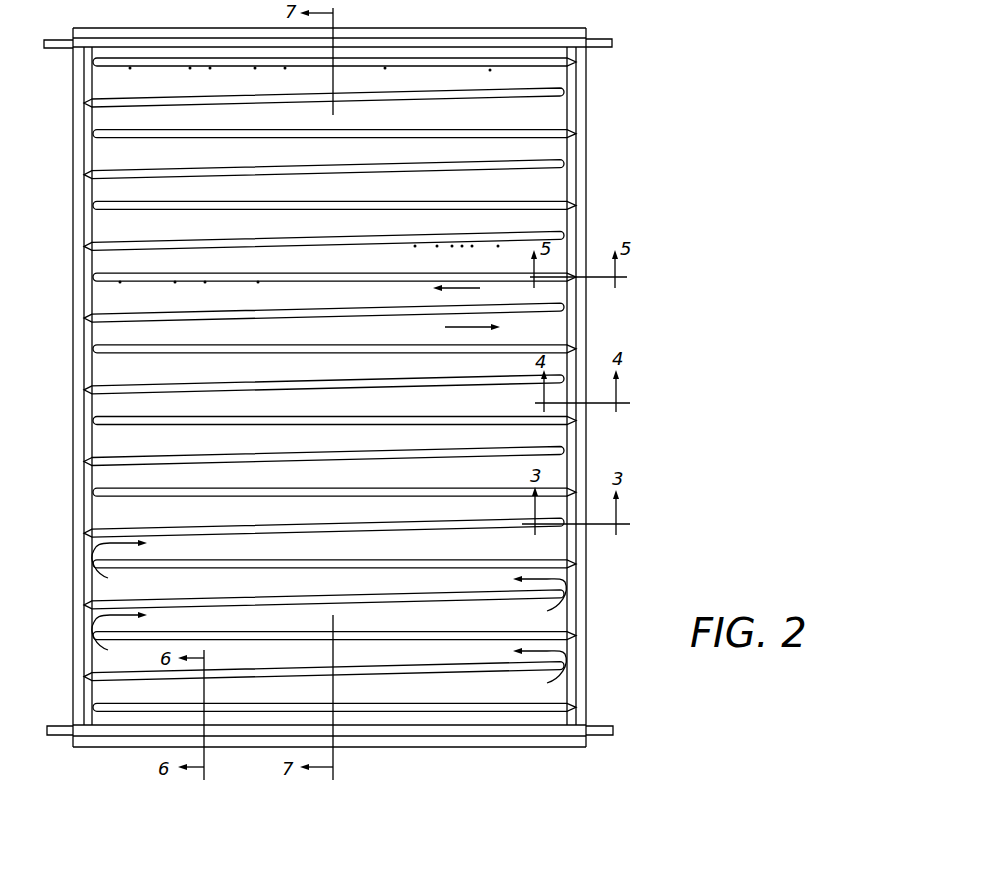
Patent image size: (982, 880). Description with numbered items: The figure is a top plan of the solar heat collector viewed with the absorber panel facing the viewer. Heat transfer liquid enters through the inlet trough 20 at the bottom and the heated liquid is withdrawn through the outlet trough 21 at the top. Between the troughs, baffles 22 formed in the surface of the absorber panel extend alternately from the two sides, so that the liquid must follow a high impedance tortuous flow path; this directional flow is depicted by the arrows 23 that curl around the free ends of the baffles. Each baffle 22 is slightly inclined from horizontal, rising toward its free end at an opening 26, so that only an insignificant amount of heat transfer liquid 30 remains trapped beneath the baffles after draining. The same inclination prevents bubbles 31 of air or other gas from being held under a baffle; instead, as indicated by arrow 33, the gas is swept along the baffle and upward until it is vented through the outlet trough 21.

The inlet trough 20 is at (596, 738).
The outlet trough 21 is at (592, 32).
The baffles 22 is at (567, 583).
The arrows 23 is at (528, 574).
The opening 26 is at (360, 384).
The heat transfer liquid 30 is at (560, 553).
The bubbles 31 is at (174, 281).
The arrow 33 is at (480, 289).